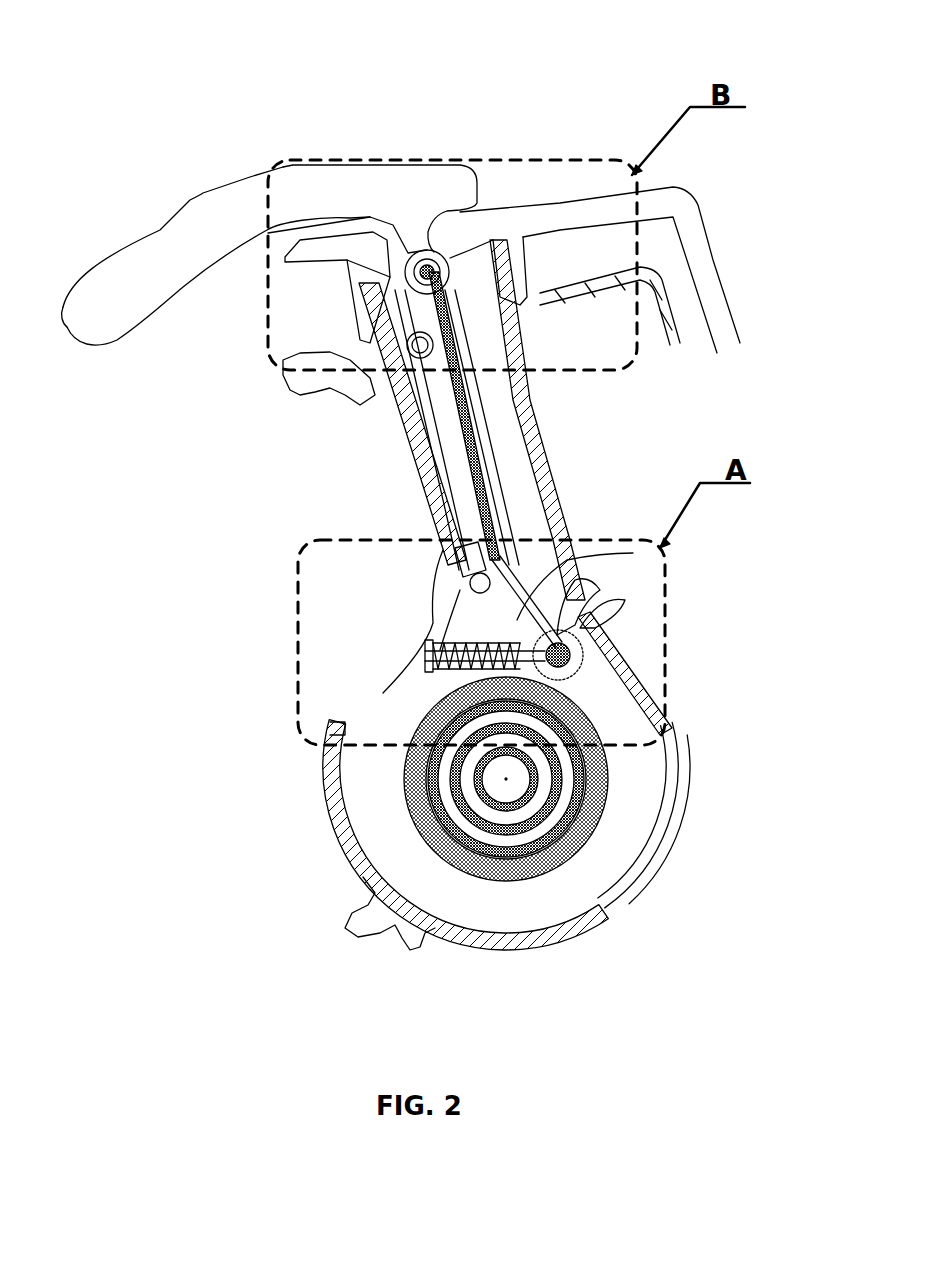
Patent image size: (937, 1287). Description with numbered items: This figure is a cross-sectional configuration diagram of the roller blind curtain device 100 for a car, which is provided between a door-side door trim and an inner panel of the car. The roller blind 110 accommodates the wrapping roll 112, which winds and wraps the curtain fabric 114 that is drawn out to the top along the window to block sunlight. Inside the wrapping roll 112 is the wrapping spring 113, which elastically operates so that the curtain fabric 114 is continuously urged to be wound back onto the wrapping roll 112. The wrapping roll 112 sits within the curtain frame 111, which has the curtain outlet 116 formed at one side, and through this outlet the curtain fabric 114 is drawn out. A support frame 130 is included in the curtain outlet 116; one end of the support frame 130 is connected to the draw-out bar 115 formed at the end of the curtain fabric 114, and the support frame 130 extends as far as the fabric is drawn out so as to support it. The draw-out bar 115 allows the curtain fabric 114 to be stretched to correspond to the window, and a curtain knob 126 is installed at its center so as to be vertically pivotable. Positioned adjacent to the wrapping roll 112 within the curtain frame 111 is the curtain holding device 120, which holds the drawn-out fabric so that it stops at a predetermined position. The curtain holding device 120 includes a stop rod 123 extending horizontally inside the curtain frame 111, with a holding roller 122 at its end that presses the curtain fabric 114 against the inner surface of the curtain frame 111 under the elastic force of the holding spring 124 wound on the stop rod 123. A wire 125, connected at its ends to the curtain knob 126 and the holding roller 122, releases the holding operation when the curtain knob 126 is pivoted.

The roller blind curtain device 100 is at (450, 140).
The curtain knob 126 is at (238, 205).
The draw-out bar 115 is at (457, 330).
The curtain outlet 116 is at (495, 418).
The support frame 130 is at (425, 398).
The roller blind 110 is at (410, 476).
The curtain fabric 114 is at (490, 482).
The wire 125 is at (517, 620).
The holding spring 124 is at (433, 623).
The stop rod 123 is at (435, 655).
The curtain holding device 120 is at (600, 633).
The holding roller 122 is at (573, 667).
The wrapping spring 113 is at (457, 807).
The wrapping roll 112 is at (573, 848).
The curtain frame 111 is at (475, 940).